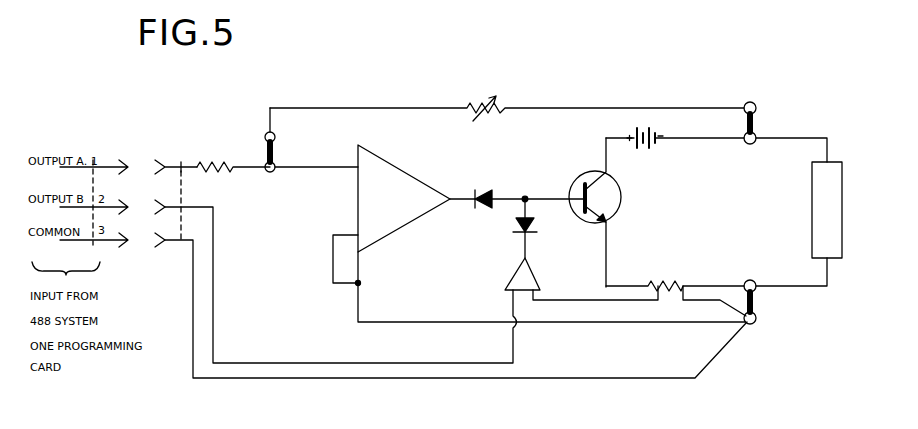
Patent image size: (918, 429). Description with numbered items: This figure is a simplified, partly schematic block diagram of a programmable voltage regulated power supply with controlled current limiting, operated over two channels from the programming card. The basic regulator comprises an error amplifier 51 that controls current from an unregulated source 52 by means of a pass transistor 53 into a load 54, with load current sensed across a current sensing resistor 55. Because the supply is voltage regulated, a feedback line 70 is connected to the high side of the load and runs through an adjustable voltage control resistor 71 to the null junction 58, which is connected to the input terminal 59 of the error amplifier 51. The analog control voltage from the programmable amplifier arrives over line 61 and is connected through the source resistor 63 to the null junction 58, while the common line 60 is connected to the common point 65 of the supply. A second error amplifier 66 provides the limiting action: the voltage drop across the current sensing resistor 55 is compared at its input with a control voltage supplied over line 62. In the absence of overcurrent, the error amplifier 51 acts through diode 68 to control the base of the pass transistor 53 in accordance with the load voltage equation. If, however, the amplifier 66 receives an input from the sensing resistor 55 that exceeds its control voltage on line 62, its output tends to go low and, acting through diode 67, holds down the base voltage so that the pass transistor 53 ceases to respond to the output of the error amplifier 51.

The error amplifier 51 is at (394, 166).
The unregulated source 52 is at (636, 130).
The pass transistor 53 is at (613, 214).
The load 54 is at (841, 164).
The current sensing resistor 55 is at (662, 282).
The null junction 58 is at (276, 163).
The input terminal 59 is at (355, 164).
The common line 60 is at (186, 244).
The analog voltage control line 61 is at (181, 165).
The current control line 62 is at (190, 206).
The source resistor 63 is at (209, 161).
The common point 65 is at (755, 323).
The second error amplifier 66 is at (507, 272).
The diode 67 is at (512, 227).
The diode 68 is at (481, 190).
The feedback line 70 is at (655, 108).
The adjustable voltage control resistor 71 is at (507, 109).